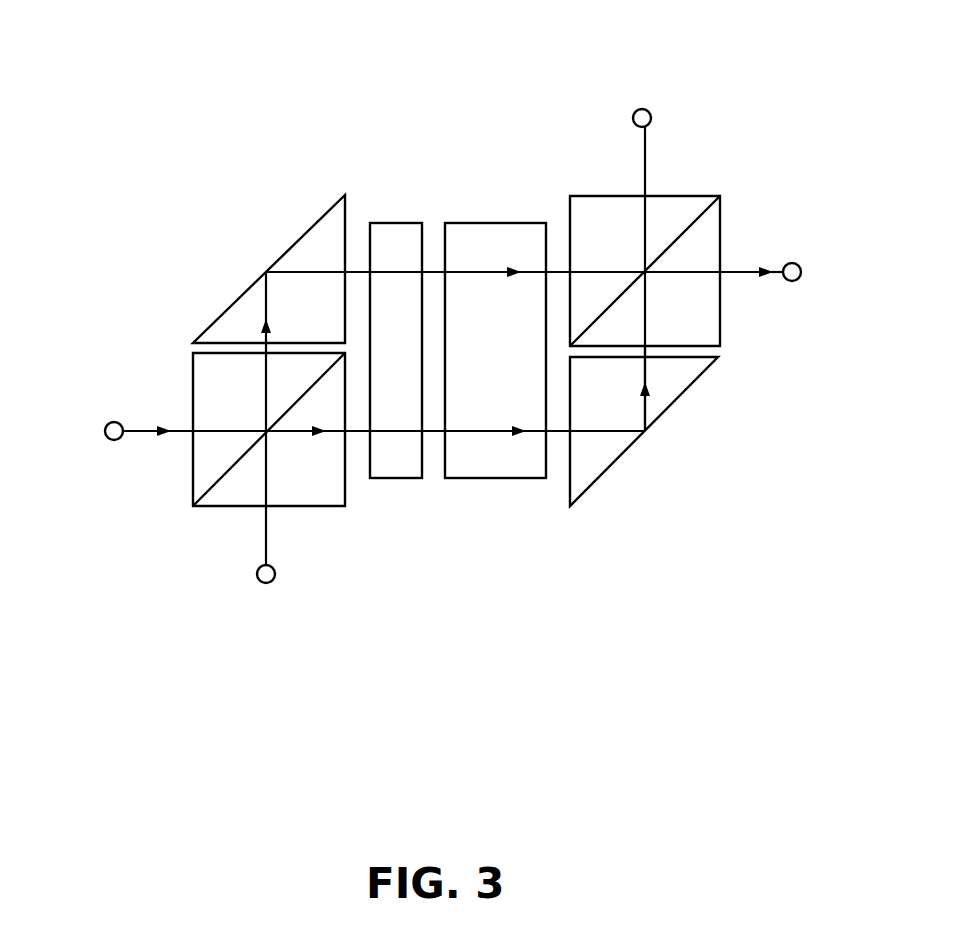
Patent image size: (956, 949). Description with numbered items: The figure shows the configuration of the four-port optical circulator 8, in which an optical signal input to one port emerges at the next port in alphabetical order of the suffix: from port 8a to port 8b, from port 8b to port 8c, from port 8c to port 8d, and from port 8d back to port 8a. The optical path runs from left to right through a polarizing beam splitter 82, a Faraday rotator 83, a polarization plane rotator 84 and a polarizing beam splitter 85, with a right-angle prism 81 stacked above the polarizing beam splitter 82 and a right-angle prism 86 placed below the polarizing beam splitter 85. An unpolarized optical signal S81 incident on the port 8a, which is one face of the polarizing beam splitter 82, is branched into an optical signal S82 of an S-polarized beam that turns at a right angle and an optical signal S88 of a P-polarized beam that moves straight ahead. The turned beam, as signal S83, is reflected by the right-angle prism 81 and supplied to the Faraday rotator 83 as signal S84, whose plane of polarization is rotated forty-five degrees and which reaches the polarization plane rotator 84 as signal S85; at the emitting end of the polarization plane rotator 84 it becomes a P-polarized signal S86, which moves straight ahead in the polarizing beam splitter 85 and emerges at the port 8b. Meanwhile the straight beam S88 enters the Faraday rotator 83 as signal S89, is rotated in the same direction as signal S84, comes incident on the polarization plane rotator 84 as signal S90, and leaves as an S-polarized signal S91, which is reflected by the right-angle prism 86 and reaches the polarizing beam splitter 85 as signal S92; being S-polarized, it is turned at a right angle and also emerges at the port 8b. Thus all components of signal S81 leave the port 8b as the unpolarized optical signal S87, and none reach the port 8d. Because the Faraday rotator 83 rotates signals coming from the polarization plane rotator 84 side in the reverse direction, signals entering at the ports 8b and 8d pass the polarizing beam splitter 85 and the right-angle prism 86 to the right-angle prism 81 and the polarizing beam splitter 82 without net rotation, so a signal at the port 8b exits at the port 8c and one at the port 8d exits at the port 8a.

The optical circulator 8 is at (252, 36).
The right-angle prism 81 is at (300, 232).
The polarizing beam splitter 82 is at (310, 508).
The Faraday rotator 83 is at (397, 222).
The polarization plane rotator 84 is at (500, 222).
The polarizing beam splitter 85 is at (698, 196).
The right-angle prism 86 is at (680, 402).
The port 8a is at (107, 440).
The port 8b is at (801, 278).
The port 8c is at (266, 584).
The port 8d is at (650, 112).
The optical signal S81 is at (146, 429).
The optical signal S82 is at (265, 404).
The signal S83 is at (297, 278).
The signal S84 is at (392, 277).
The signal S85 is at (480, 277).
The signal S86 is at (608, 271).
The optical signal S87 is at (743, 270).
The optical signal S88 is at (296, 436).
The signal S89 is at (396, 429).
The signal S90 is at (481, 429).
The signal S91 is at (592, 430).
The signal S92 is at (650, 345).